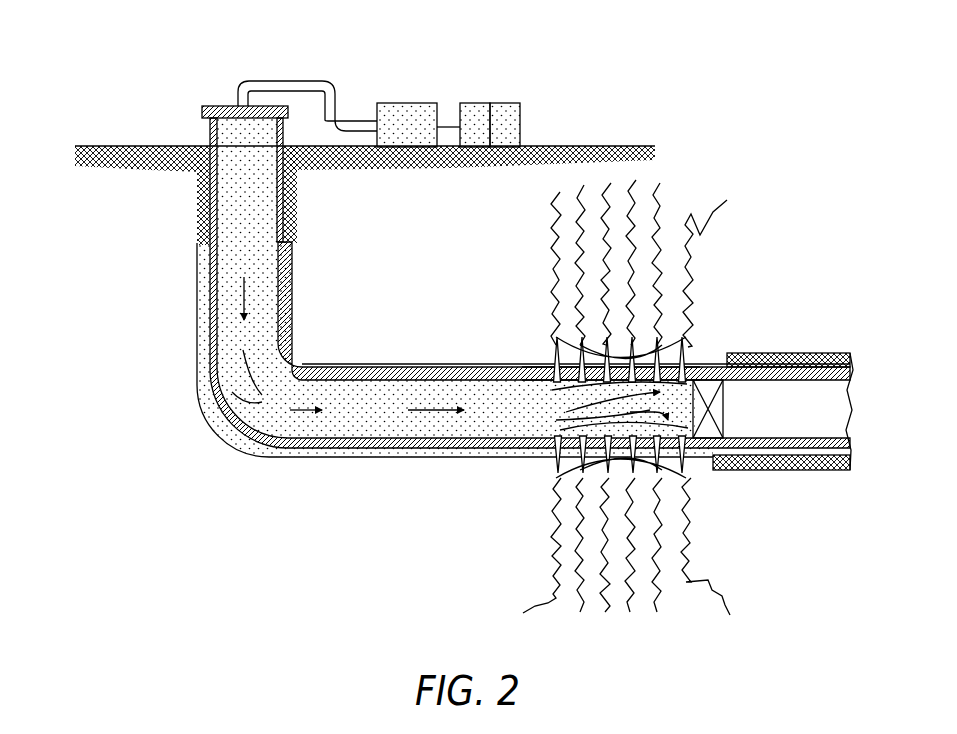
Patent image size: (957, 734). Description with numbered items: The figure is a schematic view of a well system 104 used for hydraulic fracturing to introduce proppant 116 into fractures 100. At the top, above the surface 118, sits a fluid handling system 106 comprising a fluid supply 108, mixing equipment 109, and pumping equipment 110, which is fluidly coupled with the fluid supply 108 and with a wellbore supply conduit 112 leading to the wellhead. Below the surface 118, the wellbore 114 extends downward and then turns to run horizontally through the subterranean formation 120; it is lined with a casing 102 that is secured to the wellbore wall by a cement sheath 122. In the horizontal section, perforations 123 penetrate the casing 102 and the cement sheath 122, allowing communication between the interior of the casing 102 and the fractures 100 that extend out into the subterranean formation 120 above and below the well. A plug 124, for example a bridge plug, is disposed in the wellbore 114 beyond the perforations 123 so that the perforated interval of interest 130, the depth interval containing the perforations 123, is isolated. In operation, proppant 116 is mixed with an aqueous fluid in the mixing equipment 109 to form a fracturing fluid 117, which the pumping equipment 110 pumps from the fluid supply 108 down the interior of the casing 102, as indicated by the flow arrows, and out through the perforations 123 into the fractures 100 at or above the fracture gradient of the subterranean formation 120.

The fractures 100 is at (558, 223).
The casing 102 is at (462, 374).
The well system 104 is at (130, 104).
The fluid handling system 106 is at (526, 88).
The fluid supply 108 is at (507, 103).
The mixing equipment 109 is at (476, 103).
The pumping equipment 110 is at (408, 103).
The wellbore supply conduit 112 is at (308, 80).
The wellbore 114 is at (294, 313).
The proppant 116 is at (398, 393).
The fracturing fluid 117 is at (250, 305).
The surface 118 is at (575, 146).
The subterranean formation 120 is at (346, 202).
The cement sheath 122 is at (522, 366).
The perforations 123 is at (590, 357).
The plug 124 is at (733, 408).
The perforated interval of interest 130 is at (604, 406).